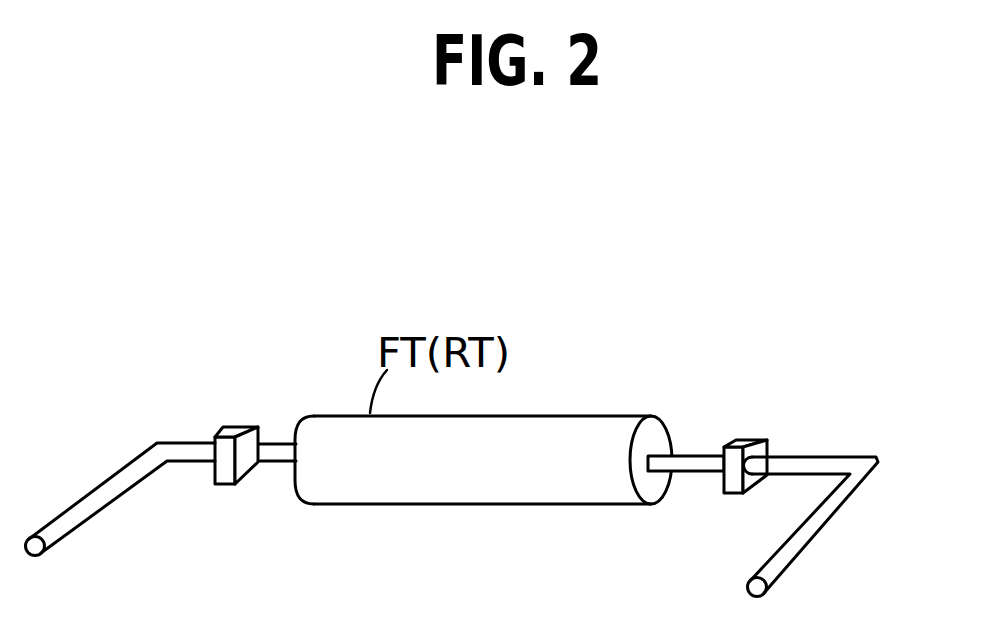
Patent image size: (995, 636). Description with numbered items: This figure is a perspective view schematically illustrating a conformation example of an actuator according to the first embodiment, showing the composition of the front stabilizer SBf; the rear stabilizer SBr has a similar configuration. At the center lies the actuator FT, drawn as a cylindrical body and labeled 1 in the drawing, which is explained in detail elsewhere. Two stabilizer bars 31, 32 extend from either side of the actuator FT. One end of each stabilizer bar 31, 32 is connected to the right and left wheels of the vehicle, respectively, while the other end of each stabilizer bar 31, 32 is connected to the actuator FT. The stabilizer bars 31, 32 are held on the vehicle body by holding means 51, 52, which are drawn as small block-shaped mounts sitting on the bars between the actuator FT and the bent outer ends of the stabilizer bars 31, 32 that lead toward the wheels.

The fuel tank (FT) / reserve tank (RT) 1 is at (565, 484).
The stabilizer bar 31 is at (80, 517).
The stabilizer bar 32 is at (838, 502).
The holding means 51 is at (229, 427).
The holding means 52 is at (740, 440).